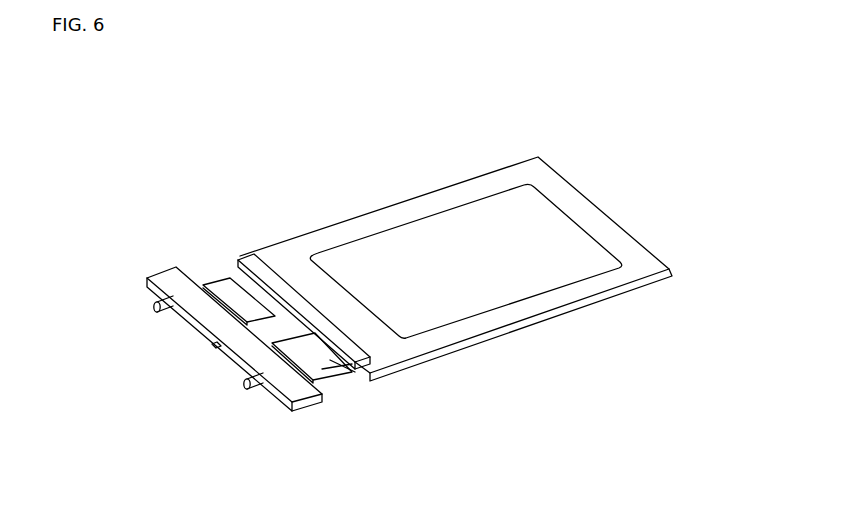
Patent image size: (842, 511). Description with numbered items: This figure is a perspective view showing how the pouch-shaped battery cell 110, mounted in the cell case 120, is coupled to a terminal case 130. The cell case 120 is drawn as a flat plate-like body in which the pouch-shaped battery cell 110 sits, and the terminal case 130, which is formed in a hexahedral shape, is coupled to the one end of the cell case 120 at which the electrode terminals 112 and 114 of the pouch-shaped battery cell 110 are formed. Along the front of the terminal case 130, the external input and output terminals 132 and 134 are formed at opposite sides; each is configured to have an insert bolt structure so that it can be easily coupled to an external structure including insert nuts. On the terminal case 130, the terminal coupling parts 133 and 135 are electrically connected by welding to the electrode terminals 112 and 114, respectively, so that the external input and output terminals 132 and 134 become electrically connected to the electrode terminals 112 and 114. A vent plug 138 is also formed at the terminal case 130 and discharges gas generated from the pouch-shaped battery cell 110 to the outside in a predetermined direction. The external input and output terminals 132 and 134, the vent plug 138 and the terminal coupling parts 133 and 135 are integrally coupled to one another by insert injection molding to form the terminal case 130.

The pouch-shaped battery cell 110 is at (535, 218).
The electrode terminal 112 is at (263, 300).
The electrode terminal 114 is at (327, 376).
The cell case 120 is at (620, 237).
The terminal case 130 is at (140, 282).
The external input and output terminal 132 is at (153, 306).
The terminal coupling part 133 is at (227, 290).
The external input and output terminal 134 is at (250, 388).
The terminal coupling part 135 is at (313, 380).
The vent plug 138 is at (212, 347).